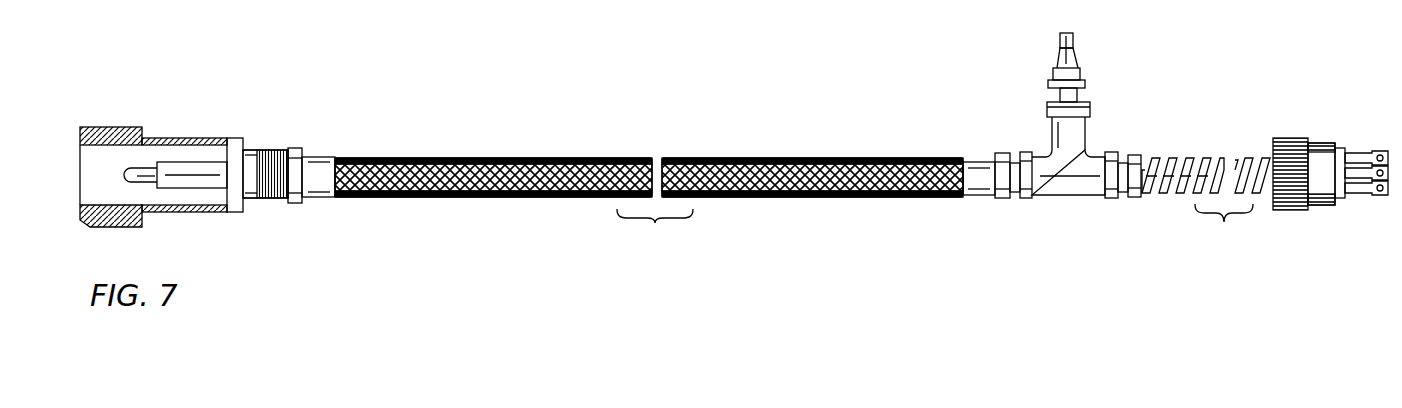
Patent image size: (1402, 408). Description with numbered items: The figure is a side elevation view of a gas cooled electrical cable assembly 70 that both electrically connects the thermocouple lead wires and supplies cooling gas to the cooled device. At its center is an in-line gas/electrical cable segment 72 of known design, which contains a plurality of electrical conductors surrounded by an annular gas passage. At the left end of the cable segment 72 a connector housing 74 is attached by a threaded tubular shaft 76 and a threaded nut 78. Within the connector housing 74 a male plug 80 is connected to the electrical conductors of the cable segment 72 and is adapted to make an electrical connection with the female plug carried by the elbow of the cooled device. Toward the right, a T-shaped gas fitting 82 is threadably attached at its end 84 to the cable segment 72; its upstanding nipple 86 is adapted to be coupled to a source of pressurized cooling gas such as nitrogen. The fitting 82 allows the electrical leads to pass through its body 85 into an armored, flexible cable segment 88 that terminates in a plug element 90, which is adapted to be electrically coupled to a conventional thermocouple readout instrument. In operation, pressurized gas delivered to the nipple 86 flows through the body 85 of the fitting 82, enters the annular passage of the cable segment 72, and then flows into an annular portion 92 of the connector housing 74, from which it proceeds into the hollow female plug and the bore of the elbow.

The gas cooled electrical cable assembly 70 is at (440, 148).
The in-line gas/electrical cable segment 72 is at (773, 158).
The connector housing 74 is at (185, 140).
The threaded tubular shaft 76 is at (273, 160).
The threaded nut 78 is at (297, 203).
The male plug 80 is at (132, 168).
The T-shaped gas fitting 82 is at (1080, 136).
The end 84 is at (1027, 152).
The body 85 is at (1068, 197).
The nipple 86 is at (1074, 40).
The armored, flexible cable segment 88 is at (1168, 158).
The plug element 90 is at (1320, 203).
The annular portion 92 is at (190, 197).